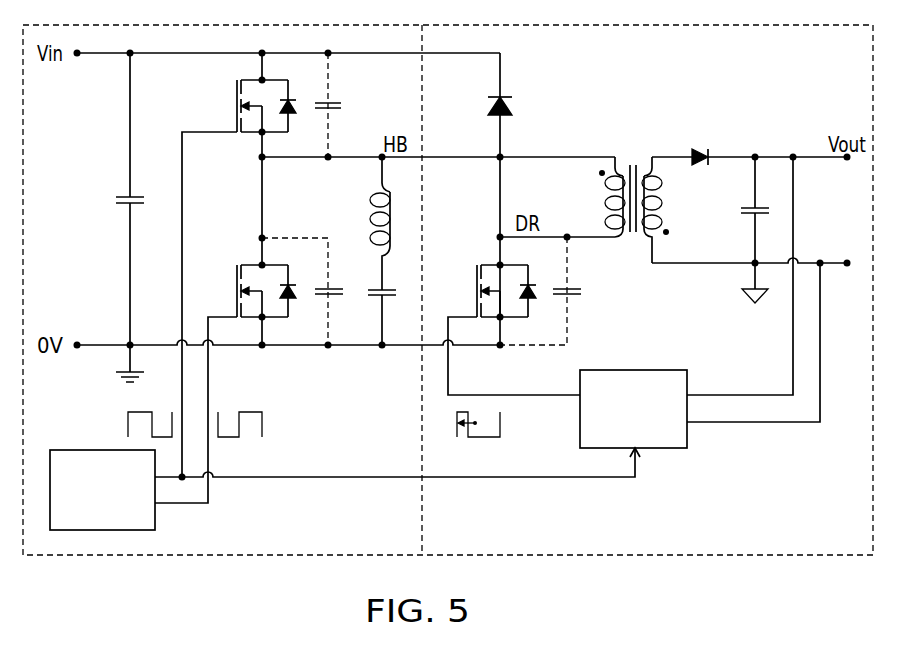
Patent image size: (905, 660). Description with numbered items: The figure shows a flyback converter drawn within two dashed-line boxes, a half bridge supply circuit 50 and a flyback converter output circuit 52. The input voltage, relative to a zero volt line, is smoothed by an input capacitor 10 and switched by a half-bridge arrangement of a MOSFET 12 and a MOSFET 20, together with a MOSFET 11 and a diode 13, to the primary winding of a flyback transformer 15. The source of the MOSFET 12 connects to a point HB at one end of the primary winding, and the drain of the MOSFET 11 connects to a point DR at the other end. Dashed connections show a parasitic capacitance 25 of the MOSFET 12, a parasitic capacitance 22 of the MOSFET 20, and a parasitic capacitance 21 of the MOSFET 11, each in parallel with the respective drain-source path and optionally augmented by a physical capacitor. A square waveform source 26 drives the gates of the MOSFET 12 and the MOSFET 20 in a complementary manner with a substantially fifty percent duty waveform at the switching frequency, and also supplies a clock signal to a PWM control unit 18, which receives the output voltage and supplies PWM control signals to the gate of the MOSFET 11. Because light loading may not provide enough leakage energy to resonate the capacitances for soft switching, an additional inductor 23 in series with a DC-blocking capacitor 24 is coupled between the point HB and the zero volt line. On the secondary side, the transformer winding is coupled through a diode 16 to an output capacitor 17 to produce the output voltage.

The input capacitor 10 is at (113, 191).
The MOSFET 12 is at (232, 113).
The MOSFET 20 is at (228, 283).
The parasitic capacitance 22 is at (314, 285).
The inductor 23 is at (368, 213).
The capacitor 24 is at (368, 288).
The parasitic capacitance 25 is at (345, 107).
The MOSFET 11 is at (472, 283).
The diode 13 is at (518, 110).
The flyback transformer 15 is at (630, 243).
The diode 16 is at (705, 148).
The output capacitor 17 is at (738, 211).
The PWM control unit 18 is at (634, 370).
The parasitic capacitance 21 is at (587, 299).
The square waveform source 26 is at (68, 450).
The half bridge supply circuit 50 is at (407, 552).
The flyback converter output circuit 52 is at (637, 552).